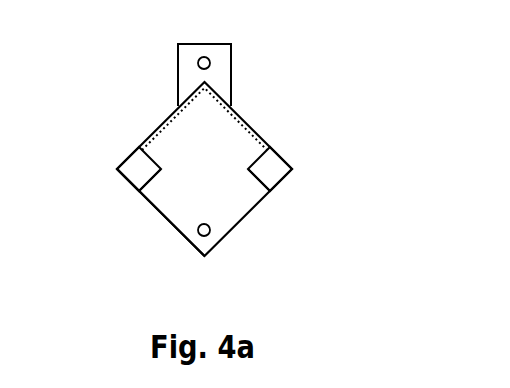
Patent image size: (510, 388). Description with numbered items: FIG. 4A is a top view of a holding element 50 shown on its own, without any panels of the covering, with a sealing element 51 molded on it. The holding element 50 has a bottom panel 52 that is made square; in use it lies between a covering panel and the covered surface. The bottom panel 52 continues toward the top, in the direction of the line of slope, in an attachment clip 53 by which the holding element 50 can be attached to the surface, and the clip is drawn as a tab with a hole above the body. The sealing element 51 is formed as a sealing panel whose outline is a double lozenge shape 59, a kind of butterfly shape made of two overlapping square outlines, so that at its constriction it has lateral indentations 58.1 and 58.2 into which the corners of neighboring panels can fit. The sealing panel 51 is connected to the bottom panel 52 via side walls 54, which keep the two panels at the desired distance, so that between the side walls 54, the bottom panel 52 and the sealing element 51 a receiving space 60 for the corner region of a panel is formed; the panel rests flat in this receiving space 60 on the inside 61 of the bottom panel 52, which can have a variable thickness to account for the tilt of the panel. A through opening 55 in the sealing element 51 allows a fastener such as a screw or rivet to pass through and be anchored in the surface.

The holding element 50 is at (252, 97).
The sealing element 51 is at (225, 150).
The bottom panel 52 is at (138, 170).
The attachment clip 53 is at (222, 69).
The side walls 54 is at (247, 125).
The through opening 55 is at (211, 233).
The lateral indentation 58.1 is at (266, 188).
The lateral indentation 58.2 is at (148, 185).
The double lozenge shape 59 is at (172, 224).
The receiving space 60 is at (237, 135).
The inside of the bottom panel 61 is at (270, 172).